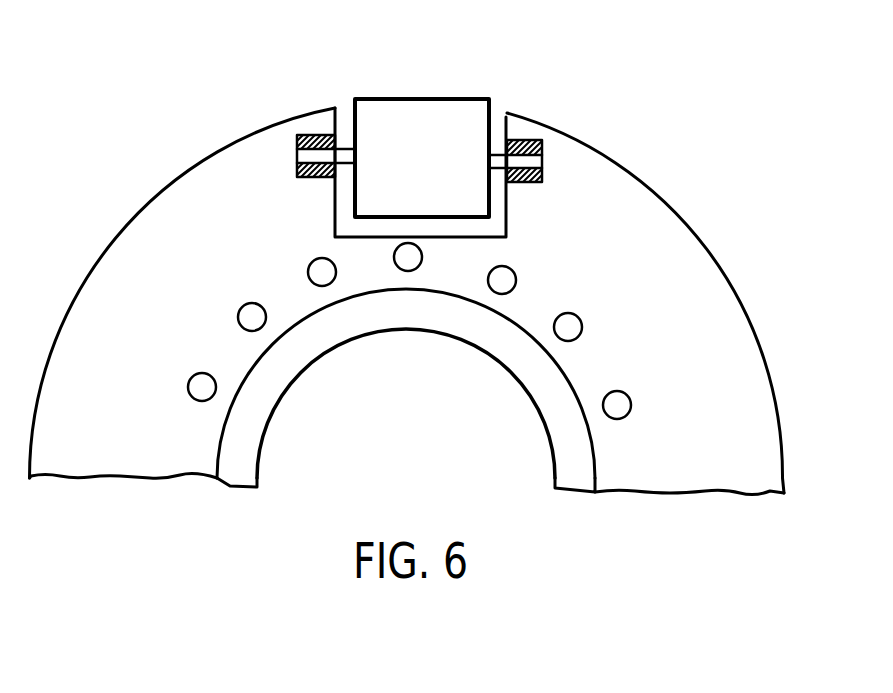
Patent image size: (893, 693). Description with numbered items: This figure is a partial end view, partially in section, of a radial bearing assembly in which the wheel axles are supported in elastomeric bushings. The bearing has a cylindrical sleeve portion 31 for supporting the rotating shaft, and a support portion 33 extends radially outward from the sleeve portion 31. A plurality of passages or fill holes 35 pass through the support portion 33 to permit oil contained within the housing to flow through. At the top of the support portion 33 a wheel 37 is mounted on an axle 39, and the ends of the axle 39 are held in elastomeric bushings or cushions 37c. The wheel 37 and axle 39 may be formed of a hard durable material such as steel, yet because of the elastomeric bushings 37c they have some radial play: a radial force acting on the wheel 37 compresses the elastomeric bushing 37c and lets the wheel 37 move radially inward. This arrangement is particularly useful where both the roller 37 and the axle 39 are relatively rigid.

The cylindrical sleeve portion 31 is at (533, 377).
The support portion 33 is at (113, 431).
The fill holes 35 is at (248, 318).
The wheel 37 is at (420, 108).
The elastomeric bushing 37c is at (298, 137).
The wheel axle 39 is at (302, 157).